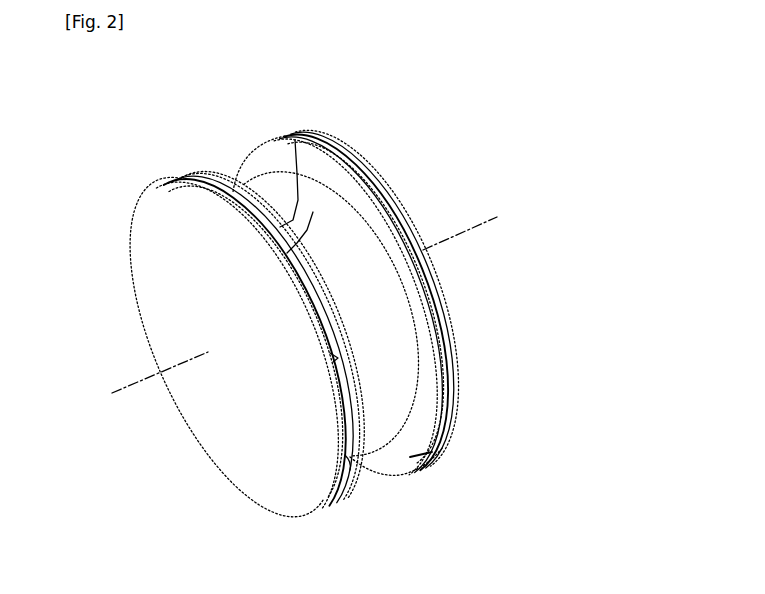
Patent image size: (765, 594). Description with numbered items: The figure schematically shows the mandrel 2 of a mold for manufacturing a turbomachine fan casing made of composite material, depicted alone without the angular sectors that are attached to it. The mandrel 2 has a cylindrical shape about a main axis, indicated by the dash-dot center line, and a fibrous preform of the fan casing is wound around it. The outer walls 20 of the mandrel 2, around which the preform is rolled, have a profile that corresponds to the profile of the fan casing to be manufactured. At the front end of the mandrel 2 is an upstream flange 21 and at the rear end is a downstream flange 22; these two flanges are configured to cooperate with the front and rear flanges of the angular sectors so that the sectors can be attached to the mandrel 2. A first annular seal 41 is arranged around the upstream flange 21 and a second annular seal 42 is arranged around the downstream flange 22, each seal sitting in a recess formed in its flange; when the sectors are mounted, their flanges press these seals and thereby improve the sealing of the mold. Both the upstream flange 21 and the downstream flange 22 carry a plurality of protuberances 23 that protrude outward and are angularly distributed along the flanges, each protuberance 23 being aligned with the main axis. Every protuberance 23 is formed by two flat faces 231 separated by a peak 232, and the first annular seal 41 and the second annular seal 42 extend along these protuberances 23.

The mandrel 2 is at (153, 260).
The outer walls 20 is at (283, 197).
The upstream flange 21 is at (348, 467).
The downstream flange 22 is at (412, 458).
The protuberances 23 is at (238, 160).
The flat faces 231 is at (342, 157).
The peak 232 is at (314, 235).
The first annular seal 41 is at (193, 177).
The second annular seal 42 is at (447, 393).